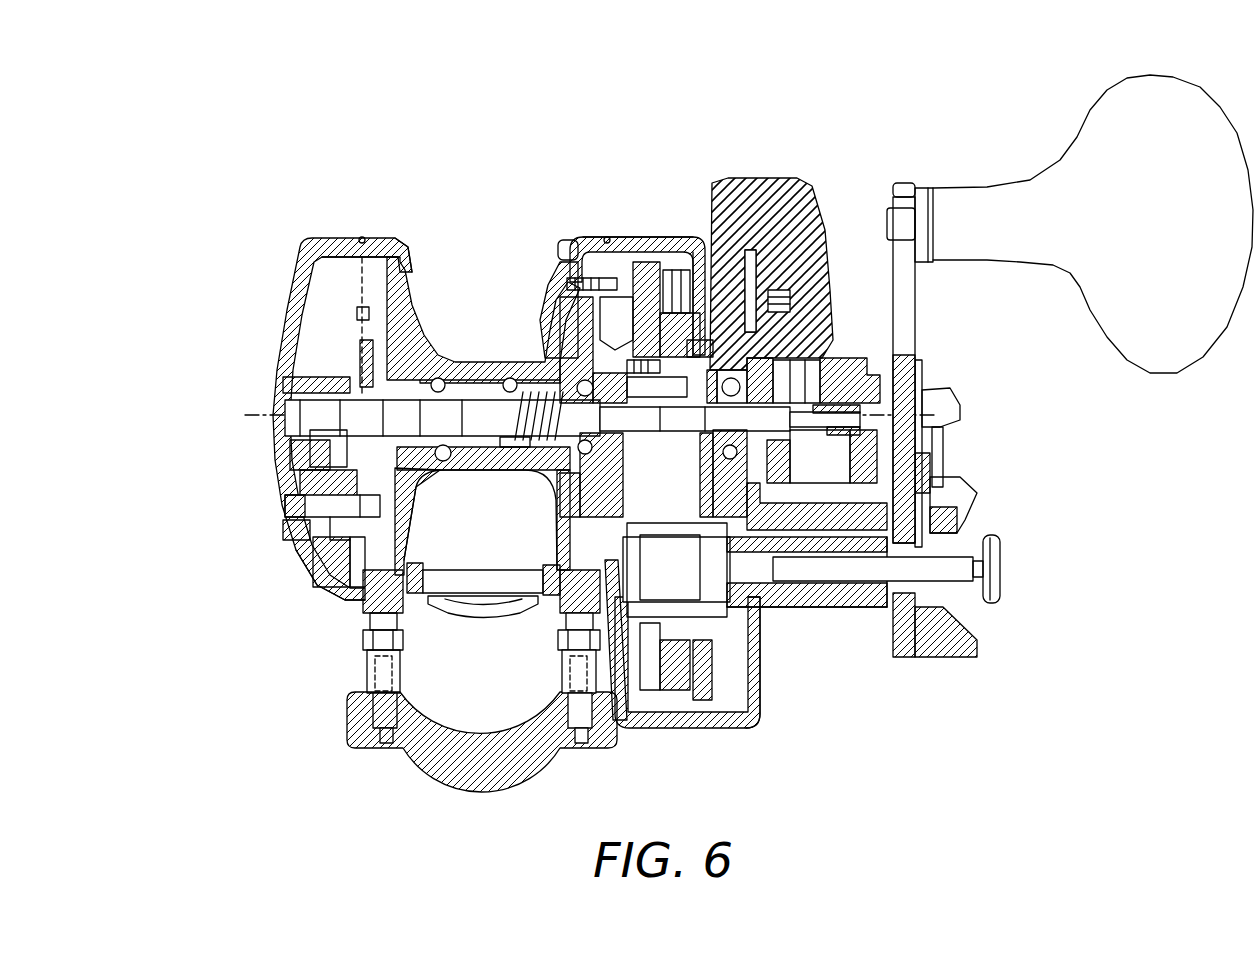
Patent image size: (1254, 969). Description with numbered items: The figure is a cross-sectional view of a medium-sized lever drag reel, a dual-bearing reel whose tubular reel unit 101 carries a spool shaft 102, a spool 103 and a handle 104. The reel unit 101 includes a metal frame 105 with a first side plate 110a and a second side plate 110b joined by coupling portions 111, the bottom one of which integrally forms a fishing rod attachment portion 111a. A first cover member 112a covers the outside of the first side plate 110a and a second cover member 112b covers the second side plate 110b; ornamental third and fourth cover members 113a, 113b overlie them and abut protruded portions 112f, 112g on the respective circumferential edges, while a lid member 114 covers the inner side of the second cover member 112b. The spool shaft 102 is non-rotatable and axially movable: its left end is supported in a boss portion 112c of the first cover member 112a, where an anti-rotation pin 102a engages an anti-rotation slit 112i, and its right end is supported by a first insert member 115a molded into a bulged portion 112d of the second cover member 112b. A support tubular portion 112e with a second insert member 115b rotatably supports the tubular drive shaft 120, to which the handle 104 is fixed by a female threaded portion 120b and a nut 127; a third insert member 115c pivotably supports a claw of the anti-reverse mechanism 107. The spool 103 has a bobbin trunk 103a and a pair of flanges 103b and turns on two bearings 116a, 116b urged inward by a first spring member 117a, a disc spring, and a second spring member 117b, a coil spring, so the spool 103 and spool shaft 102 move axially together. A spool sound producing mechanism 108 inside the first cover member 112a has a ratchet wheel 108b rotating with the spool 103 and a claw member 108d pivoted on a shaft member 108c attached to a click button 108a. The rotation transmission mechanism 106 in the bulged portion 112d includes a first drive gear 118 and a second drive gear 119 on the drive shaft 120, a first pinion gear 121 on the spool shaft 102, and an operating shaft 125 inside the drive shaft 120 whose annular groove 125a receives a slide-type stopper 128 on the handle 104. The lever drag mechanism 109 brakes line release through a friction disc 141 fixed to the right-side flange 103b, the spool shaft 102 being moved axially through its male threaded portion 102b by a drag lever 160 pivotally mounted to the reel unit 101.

The reel unit 101 is at (526, 162).
The spool shaft 102 is at (480, 400).
The anti-rotation pin 102a is at (292, 400).
The male threaded portion 102b is at (833, 403).
The spool 103 is at (455, 340).
The bobbin trunk 103a is at (492, 372).
The flanges 103b is at (402, 290).
The handle 104 is at (908, 322).
The frame 105 is at (375, 232).
The rotation transmission mechanism 106 is at (692, 700).
The anti-reverse mechanism 107 is at (643, 240).
The spool sound producing mechanism 108 is at (310, 597).
The click button 108a is at (300, 546).
The ratchet wheel 108b is at (300, 487).
The shaft member 108c is at (290, 528).
The claw member 108d is at (300, 500).
The lever drag mechanism 109 is at (572, 258).
The first side plate 110a is at (390, 243).
The second side plate 110b is at (565, 245).
The coupling portions 111 is at (494, 576).
The fishing rod attachment portion 111a is at (457, 617).
The first cover member 112a is at (335, 250).
The second cover member 112b is at (690, 235).
The boss portion 112c is at (320, 378).
The bulged portion 112d is at (762, 697).
The support tubular portion 112e is at (842, 622).
The protruded portion 112f is at (361, 236).
The protruded portion 112g is at (608, 236).
The anti-rotation slit 112i is at (298, 462).
The third cover member 113a is at (313, 240).
The fourth cover member 113b is at (687, 232).
The lid member 114 is at (610, 690).
The first insert member 115a is at (772, 423).
The second insert member 115b is at (892, 625).
The third insert member 115c is at (740, 200).
The bearing 116a is at (447, 474).
The bearing 116b is at (522, 462).
The first spring member 117a is at (292, 444).
The second spring member 117b is at (587, 640).
The first drive gear 118 is at (700, 730).
The second drive gear 119 is at (672, 682).
The drive shaft 120 is at (814, 615).
The female threaded portion 120b is at (935, 545).
The first pinion gear 121 is at (924, 398).
The operating shaft 125 is at (966, 588).
The annular groove 125a is at (1003, 590).
The nut 127 is at (972, 652).
The stopper 128 is at (967, 492).
The friction disc 141 is at (548, 607).
The drag lever 160 is at (805, 188).